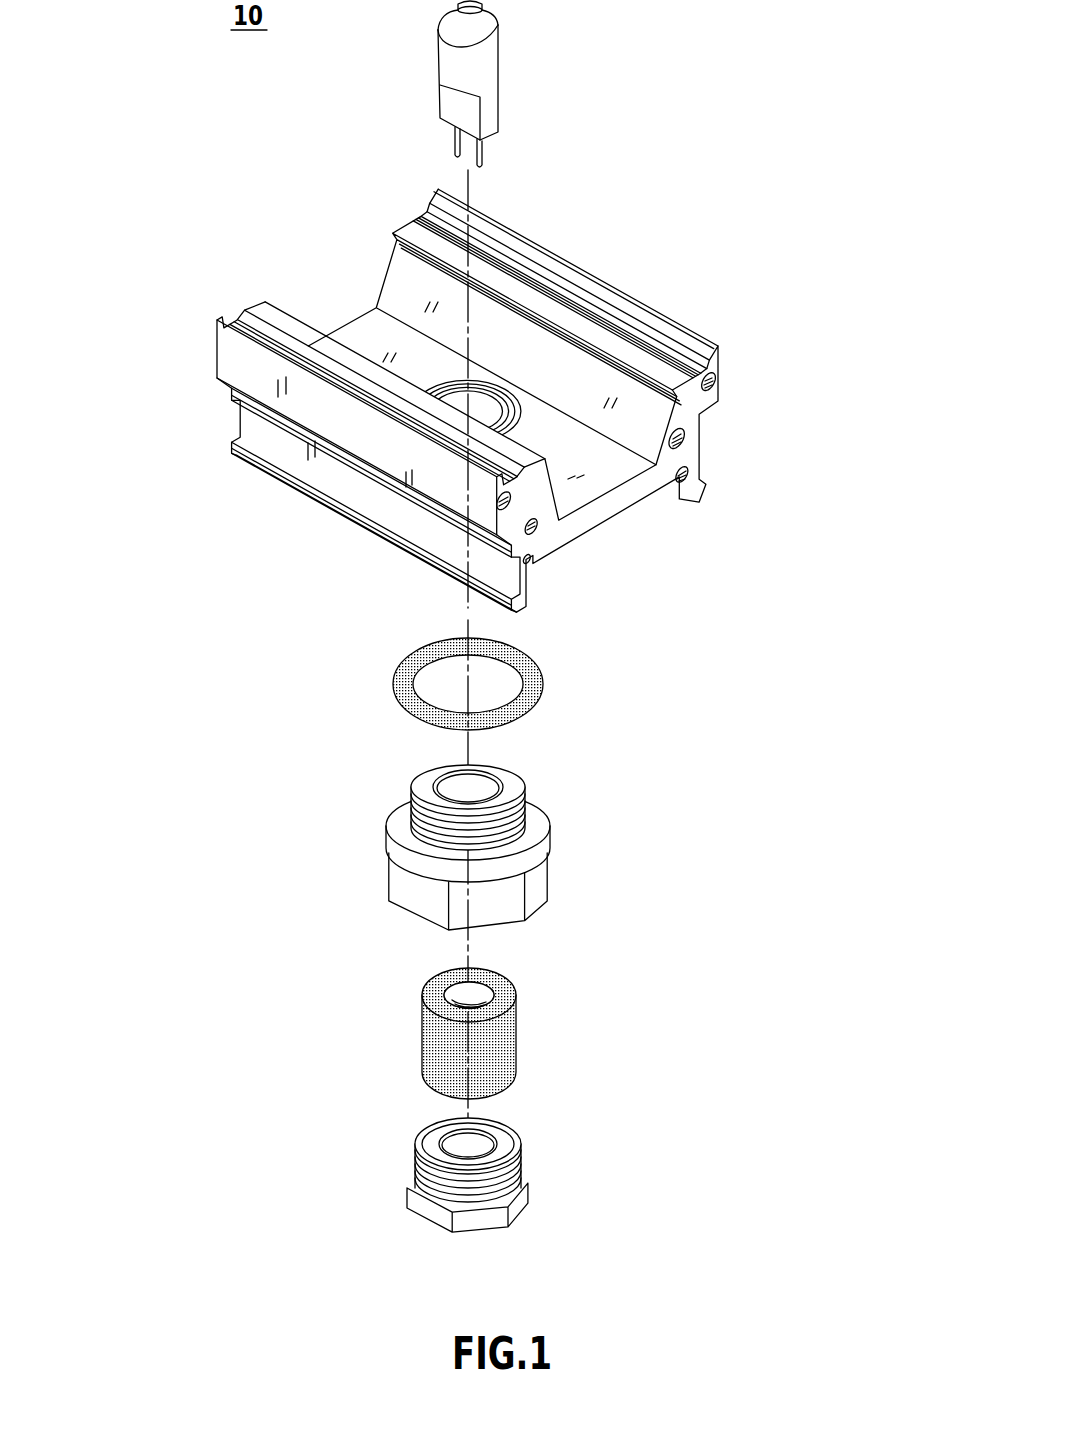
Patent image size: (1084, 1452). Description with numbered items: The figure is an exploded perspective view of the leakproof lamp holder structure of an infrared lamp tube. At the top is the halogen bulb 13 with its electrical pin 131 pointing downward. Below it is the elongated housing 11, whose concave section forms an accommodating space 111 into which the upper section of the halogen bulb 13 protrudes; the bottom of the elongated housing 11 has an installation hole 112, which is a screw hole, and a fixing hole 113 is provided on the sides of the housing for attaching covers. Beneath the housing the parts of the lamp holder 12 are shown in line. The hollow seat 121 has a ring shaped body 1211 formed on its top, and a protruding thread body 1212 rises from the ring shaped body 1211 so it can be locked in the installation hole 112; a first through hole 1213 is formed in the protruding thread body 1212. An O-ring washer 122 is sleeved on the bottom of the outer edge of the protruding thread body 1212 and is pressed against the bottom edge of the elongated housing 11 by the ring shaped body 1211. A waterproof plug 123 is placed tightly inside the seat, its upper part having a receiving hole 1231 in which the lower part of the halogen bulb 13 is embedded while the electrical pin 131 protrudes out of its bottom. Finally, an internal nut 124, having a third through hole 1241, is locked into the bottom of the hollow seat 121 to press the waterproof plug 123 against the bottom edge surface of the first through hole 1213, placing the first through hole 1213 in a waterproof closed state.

The elongated housing 11 is at (502, 400).
The accommodating space 111 is at (570, 420).
The installation hole 112 is at (500, 400).
The fixing hole 113 is at (686, 437).
The lamp holder 12 is at (516, 925).
The hollow seat 121 is at (480, 820).
The ring shaped body 1211 is at (537, 822).
The protruding thread body 1212 is at (505, 775).
The first through hole 1213 is at (450, 788).
The O-ring washer 122 is at (537, 670).
The waterproof plug 123 is at (511, 1026).
The receiving hole 1231 is at (483, 993).
The internal nut 124 is at (503, 1167).
The third through hole 1241 is at (483, 1143).
The halogen bulb 13 is at (516, 67).
The electrical pin 131 is at (482, 151).